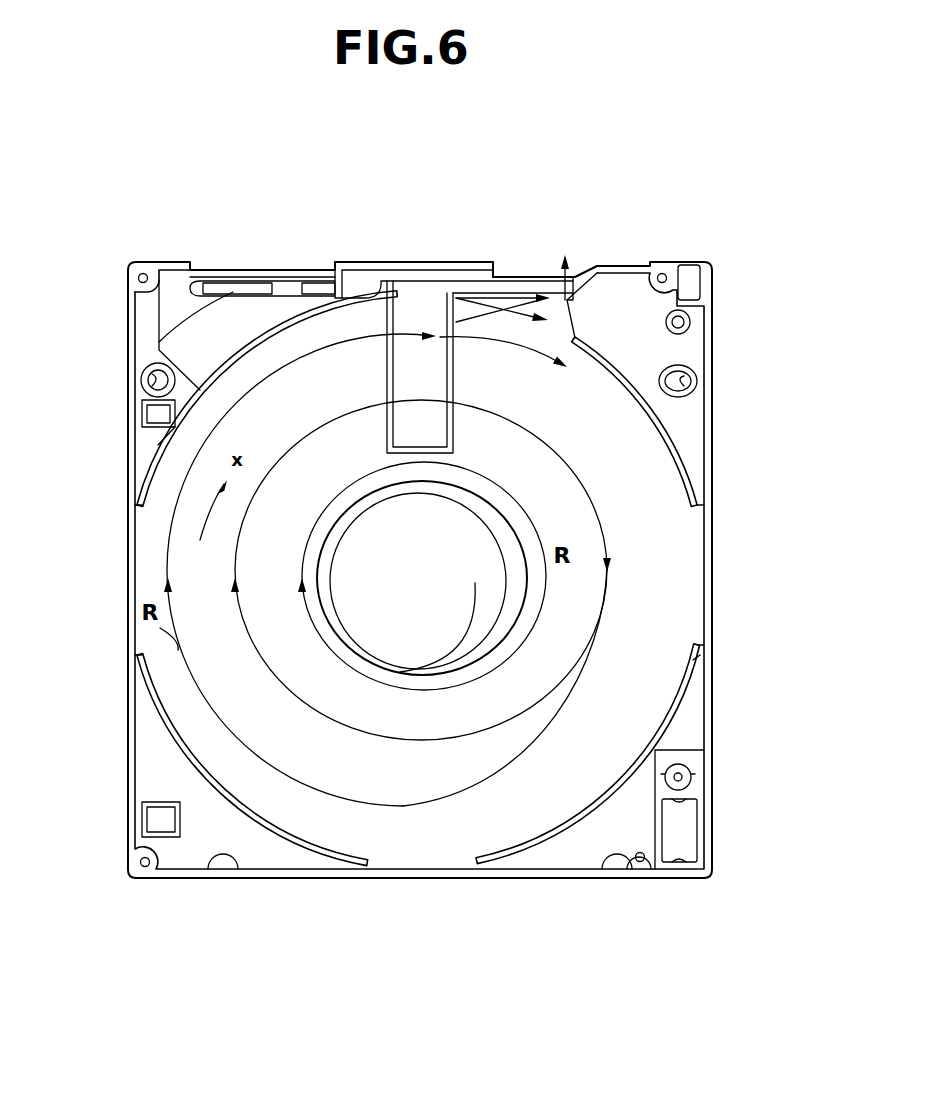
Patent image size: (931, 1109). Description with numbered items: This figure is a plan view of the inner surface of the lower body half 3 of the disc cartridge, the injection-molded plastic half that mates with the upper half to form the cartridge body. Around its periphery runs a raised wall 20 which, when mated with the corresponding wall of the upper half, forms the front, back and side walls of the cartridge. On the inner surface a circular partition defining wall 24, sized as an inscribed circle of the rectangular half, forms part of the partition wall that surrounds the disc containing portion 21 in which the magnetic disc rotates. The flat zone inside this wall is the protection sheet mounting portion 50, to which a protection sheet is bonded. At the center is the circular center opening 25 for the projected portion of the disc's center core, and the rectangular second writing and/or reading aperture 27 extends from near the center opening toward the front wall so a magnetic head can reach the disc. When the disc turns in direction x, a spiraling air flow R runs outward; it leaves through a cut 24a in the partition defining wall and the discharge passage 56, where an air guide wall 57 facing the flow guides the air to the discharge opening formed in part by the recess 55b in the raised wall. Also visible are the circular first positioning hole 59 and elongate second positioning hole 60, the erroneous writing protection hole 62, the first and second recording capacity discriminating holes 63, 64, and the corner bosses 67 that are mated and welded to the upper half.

The lower body half 3 is at (580, 880).
The raised wall 20 is at (714, 593).
The disc containing portion 21 is at (398, 777).
The partition defining wall 24 is at (248, 350).
The cut 24a is at (574, 375).
The center opening 25 is at (346, 618).
The second writing and/or reading aperture 27 is at (403, 283).
The protection sheet mounting portion 50 is at (676, 690).
The recess 55b is at (550, 288).
The discharge passage 56 is at (562, 282).
The air guide wall 57 is at (589, 313).
The first positioning hole 59 is at (152, 384).
The second positioning hole 60 is at (690, 381).
The erroneous writing protection hole 62 is at (692, 818).
The first recording capacity discriminating hole 63 is at (150, 417).
The second recording capacity discriminating hole 64 is at (152, 818).
The boss 67 is at (138, 280).